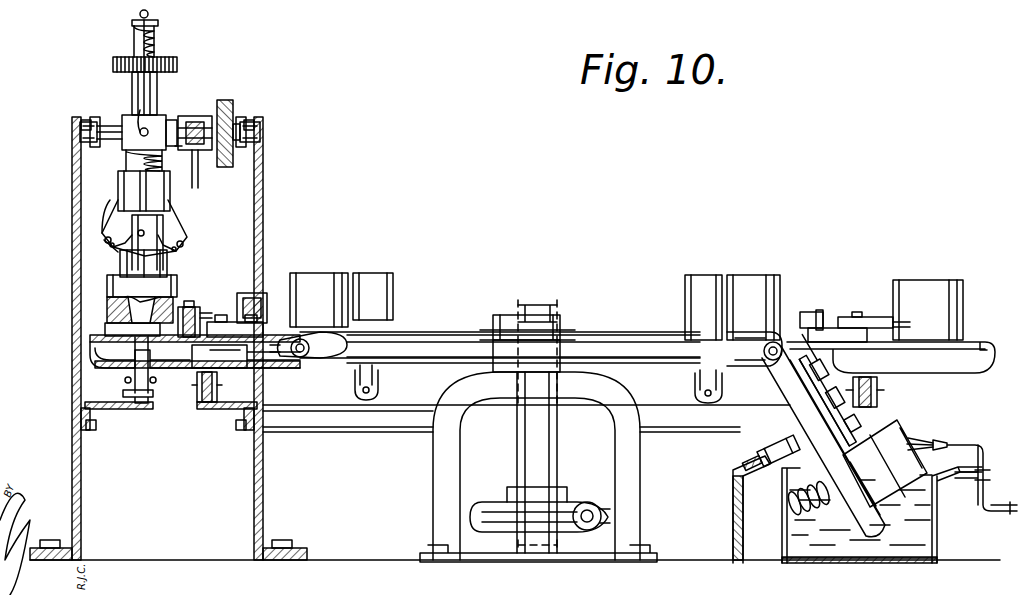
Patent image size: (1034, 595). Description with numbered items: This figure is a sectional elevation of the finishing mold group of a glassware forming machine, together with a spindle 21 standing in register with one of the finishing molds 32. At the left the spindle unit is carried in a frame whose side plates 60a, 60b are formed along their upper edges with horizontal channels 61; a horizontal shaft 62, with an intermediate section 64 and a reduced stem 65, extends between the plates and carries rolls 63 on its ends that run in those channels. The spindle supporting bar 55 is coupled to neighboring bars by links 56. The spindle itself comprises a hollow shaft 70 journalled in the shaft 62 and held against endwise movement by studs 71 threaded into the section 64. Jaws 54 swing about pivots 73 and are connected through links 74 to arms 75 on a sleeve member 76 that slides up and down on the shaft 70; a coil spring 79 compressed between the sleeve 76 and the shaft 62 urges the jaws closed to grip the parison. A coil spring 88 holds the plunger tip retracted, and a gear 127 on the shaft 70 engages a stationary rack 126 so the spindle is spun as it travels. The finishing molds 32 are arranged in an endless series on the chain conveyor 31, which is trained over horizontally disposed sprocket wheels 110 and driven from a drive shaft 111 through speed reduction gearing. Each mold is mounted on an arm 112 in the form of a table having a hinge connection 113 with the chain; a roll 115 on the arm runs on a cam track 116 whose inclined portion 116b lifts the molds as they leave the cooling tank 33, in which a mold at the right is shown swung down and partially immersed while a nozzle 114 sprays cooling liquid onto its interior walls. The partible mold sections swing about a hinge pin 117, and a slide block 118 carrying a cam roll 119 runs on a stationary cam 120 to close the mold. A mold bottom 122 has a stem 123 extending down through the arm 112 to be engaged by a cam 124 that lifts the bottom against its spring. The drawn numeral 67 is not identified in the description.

The coil spring 88 is at (156, 37).
The gear 127 is at (177, 62).
The hollow shaft 70 is at (157, 83).
The gear 67 is at (225, 100).
The channels 61 is at (94, 117).
The horizontal shaft 62 is at (172, 120).
The spindle supporting bars 55 is at (212, 116).
The studs 71 is at (142, 128).
The intermediate section 64 is at (130, 125).
The rolls 63 is at (80, 129).
The reduced end portion or stem 65 is at (96, 137).
The coil spring 79 is at (126, 163).
The links 56 is at (172, 148).
The side plate 60b is at (76, 184).
The side plate 60a is at (264, 190).
The sleeve member 76 is at (144, 191).
The arms 75 is at (118, 200).
The pivots 73 is at (148, 230).
The spindle 21 is at (194, 227).
The links 74 is at (108, 249).
The jaws 54 is at (150, 265).
The finishing molds 32 is at (177, 290).
The cam roll 119 is at (255, 300).
The hinge pin 117 is at (192, 303).
The mold bottom 122 is at (120, 328).
The arm 112 is at (90, 338).
The sprocket wheels 110 is at (512, 340).
The slide block 118 is at (800, 322).
The stationary cam 120 is at (246, 356).
The stem 123 is at (130, 378).
The stationary rack 126 is at (156, 381).
The roll 115 is at (214, 388).
The hinge connection 113 is at (298, 360).
The finishing mold conveyor 31 is at (345, 363).
The cam track 116 is at (204, 410).
The inclined portion 116b is at (870, 412).
The cam 124 is at (118, 410).
The drive shaft 111 is at (590, 502).
The nozzle 114 is at (970, 443).
The cooling tank 33 is at (935, 528).